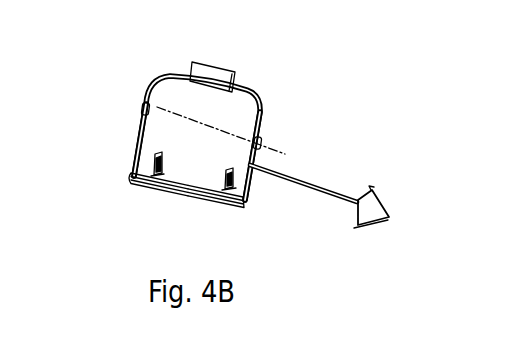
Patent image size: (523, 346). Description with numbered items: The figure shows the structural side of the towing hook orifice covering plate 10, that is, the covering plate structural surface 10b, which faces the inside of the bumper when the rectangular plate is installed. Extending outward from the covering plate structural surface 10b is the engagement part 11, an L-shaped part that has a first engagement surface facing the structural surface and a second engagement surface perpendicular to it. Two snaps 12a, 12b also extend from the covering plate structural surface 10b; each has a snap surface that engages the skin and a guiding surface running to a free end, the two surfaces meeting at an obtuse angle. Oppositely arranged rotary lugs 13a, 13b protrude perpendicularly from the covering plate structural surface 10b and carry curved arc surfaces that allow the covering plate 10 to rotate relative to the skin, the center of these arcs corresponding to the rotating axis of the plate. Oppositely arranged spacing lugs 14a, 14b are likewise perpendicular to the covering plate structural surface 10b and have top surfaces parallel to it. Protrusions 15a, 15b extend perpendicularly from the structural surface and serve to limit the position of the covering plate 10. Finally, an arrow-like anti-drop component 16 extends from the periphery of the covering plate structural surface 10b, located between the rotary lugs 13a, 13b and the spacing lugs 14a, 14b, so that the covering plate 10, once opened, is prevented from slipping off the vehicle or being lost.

The towing hook orifice covering plate 10 is at (270, 102).
The covering plate structural surface 10b is at (182, 117).
The engagement part 11 is at (218, 67).
The snap 12a is at (134, 170).
The snap 12b is at (238, 199).
The rotary lug 13a is at (140, 103).
The rotary lug 13b is at (263, 140).
The spacing lug 14a is at (136, 150).
The spacing lug 14b is at (254, 196).
The protrusion 15a is at (155, 191).
The protrusion 15b is at (213, 195).
The arrow-like anti-drop component 16 is at (322, 187).